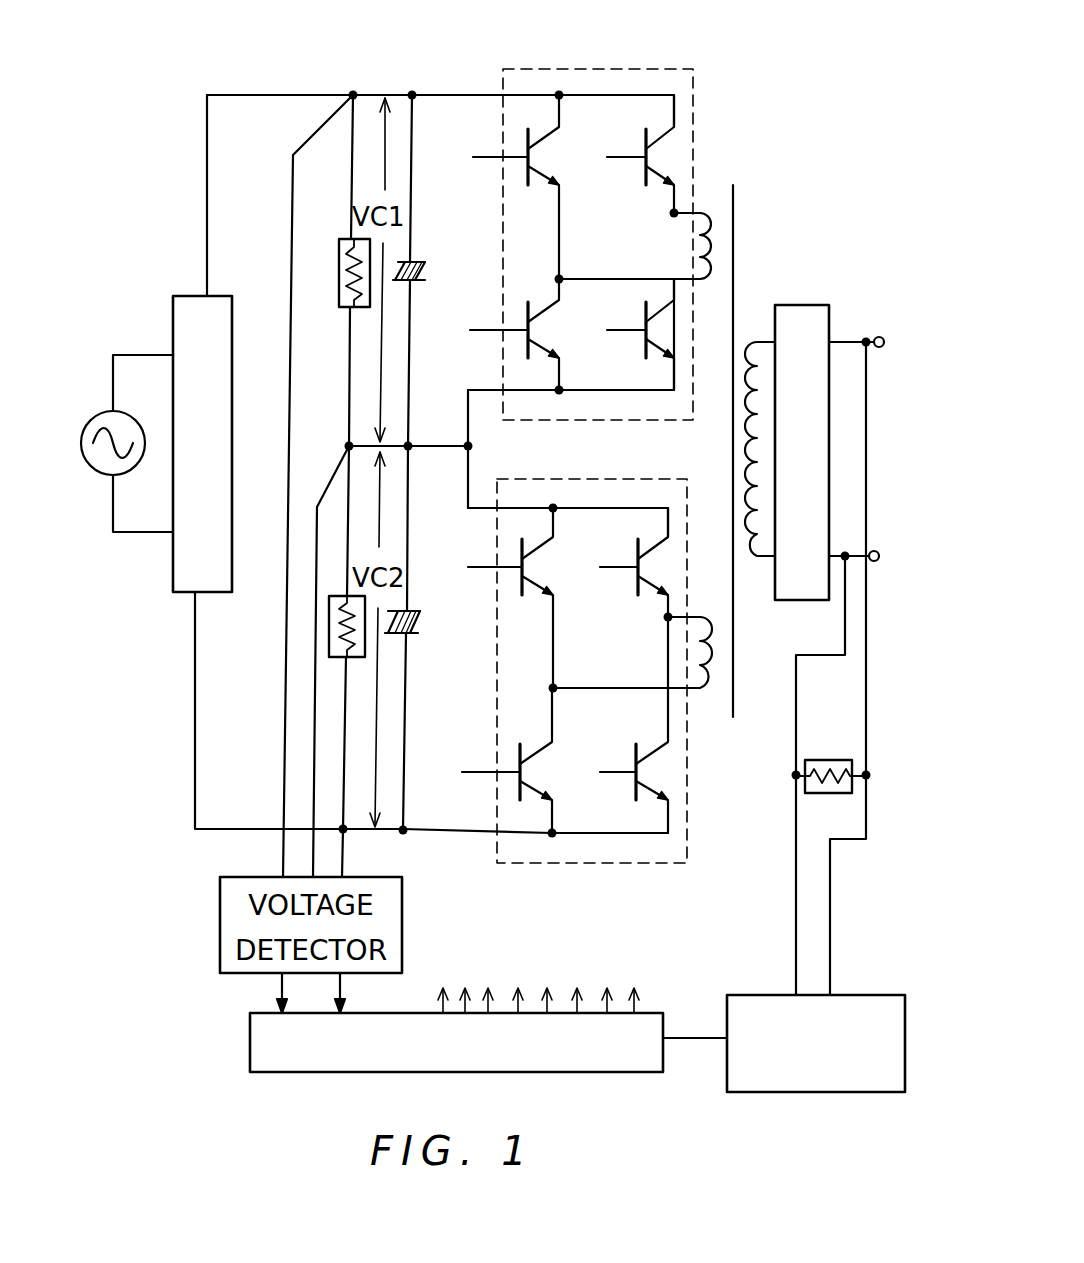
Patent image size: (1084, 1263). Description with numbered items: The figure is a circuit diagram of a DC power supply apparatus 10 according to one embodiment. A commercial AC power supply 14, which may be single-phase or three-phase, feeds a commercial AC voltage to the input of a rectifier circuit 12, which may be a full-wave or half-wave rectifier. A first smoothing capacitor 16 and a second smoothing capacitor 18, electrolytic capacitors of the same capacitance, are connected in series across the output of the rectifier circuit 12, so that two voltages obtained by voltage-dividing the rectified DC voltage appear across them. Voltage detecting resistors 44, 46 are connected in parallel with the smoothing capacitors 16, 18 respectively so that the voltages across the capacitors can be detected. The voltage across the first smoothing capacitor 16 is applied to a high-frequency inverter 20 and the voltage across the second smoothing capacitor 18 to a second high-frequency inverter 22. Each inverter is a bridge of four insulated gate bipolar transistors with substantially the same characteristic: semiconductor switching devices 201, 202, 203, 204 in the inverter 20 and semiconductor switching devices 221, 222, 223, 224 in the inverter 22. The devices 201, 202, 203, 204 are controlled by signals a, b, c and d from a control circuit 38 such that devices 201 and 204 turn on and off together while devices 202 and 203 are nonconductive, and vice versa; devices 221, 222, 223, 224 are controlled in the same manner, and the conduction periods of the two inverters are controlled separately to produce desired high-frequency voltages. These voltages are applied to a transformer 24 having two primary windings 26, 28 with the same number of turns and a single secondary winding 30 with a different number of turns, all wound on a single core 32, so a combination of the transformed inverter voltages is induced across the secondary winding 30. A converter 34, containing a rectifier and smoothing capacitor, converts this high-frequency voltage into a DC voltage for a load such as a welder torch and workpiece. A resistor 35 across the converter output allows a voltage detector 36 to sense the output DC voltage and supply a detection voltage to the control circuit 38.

The DC power supply apparatus 10 is at (347, 64).
The rectifier circuit 12 is at (182, 585).
The commercial AC power supply 14 is at (105, 476).
The first smoothing capacitor 16 is at (425, 272).
The second smoothing capacitor 18 is at (423, 622).
The high-frequency inverter 20 is at (612, 76).
The semiconductor switching device 201 is at (548, 157).
The semiconductor switching device 202 is at (543, 325).
The semiconductor switching device 203 is at (663, 157).
The semiconductor switching device 204 is at (662, 318).
The high-frequency inverter 22 is at (497, 722).
The semiconductor switching device 221 is at (548, 560).
The semiconductor switching device 222 is at (533, 772).
The semiconductor switching device 223 is at (660, 567).
The semiconductor switching device 224 is at (647, 777).
The transformer 24 is at (792, 241).
The primary winding 26 is at (710, 222).
The primary winding 28 is at (720, 668).
The secondary winding 30 is at (743, 342).
The core 32 is at (733, 597).
The converter 34 is at (818, 317).
The resistor 35 is at (818, 793).
The voltage detector 36 is at (845, 1092).
The control circuit 38 is at (600, 1073).
The voltage detecting resistor 44 is at (339, 268).
The voltage detecting resistor 46 is at (329, 641).